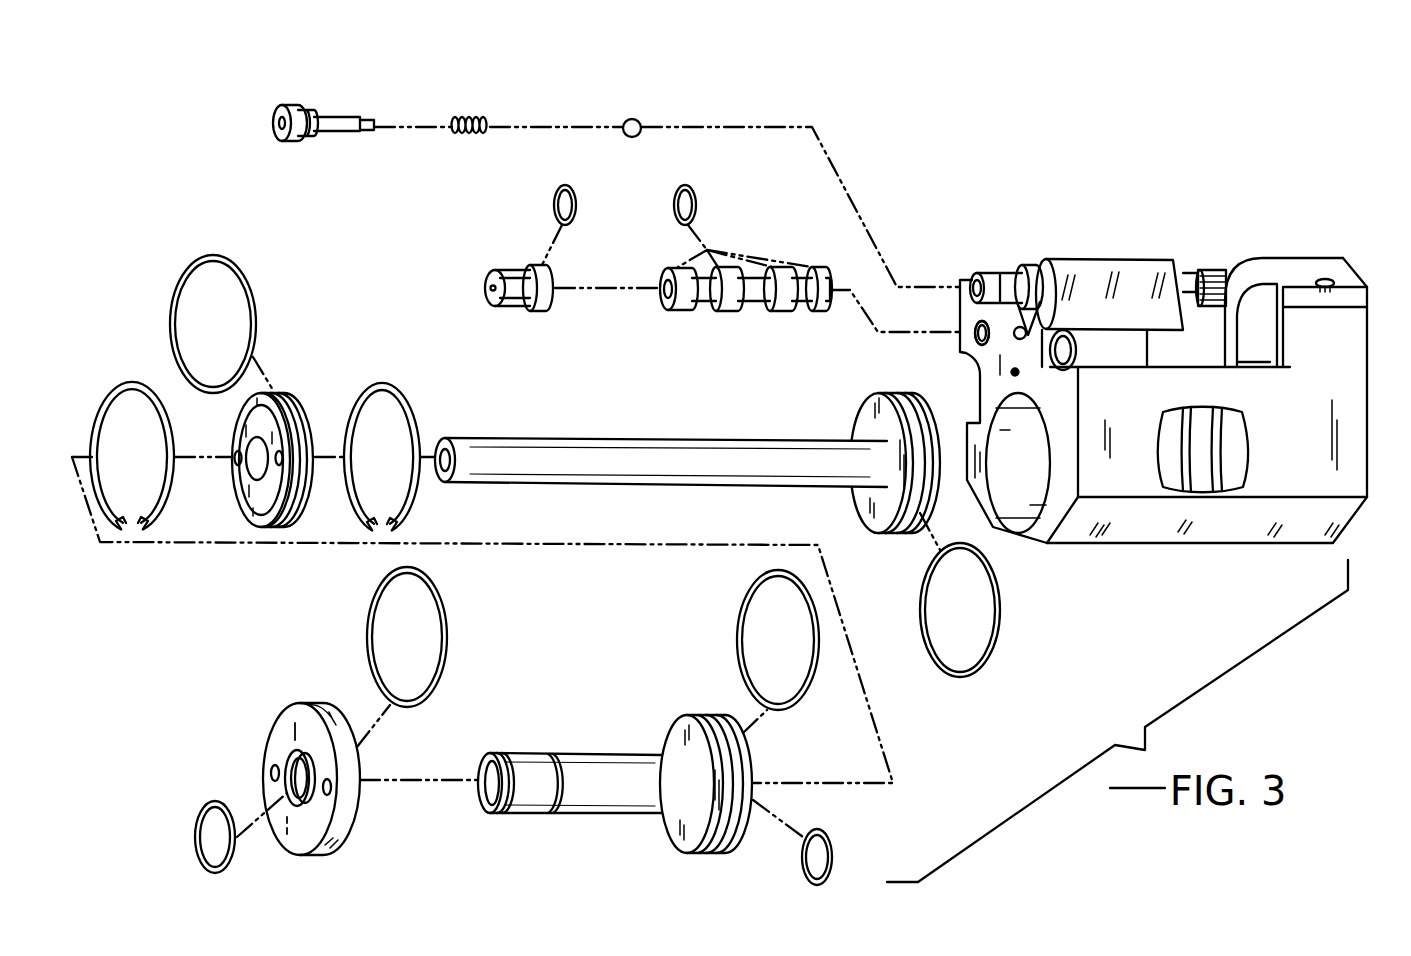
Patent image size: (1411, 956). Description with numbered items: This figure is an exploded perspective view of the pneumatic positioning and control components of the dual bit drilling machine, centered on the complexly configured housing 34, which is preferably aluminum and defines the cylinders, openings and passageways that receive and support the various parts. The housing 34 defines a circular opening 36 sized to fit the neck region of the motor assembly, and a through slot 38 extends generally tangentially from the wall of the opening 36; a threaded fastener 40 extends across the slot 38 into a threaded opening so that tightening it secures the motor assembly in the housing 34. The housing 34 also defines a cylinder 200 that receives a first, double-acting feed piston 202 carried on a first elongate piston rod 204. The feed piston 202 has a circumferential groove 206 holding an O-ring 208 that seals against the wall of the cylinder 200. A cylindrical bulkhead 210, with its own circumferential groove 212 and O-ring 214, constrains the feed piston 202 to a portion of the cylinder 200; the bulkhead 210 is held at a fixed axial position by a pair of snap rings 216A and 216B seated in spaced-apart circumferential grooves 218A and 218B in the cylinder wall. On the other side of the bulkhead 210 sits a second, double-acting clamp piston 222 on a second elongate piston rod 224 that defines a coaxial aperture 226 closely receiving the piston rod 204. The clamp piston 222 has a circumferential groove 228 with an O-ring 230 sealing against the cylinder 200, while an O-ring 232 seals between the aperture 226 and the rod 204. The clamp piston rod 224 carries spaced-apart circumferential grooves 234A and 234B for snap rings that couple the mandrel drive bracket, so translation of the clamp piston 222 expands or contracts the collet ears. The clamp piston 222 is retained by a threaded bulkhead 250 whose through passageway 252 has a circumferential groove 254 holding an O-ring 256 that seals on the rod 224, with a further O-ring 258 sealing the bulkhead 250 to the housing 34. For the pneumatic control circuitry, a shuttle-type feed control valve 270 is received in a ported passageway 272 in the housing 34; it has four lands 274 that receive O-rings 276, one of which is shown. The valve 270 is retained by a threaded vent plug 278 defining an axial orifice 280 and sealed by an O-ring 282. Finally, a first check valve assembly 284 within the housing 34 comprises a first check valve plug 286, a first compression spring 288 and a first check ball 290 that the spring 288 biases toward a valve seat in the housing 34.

The housing 34 is at (1245, 533).
The circular opening 36 is at (1284, 312).
The through slot 38 is at (1353, 310).
The threaded fastener 40 is at (1325, 280).
The cylinder 200 is at (1062, 444).
The feed piston 202 is at (860, 420).
The elongate piston rod 204 is at (617, 447).
The circumferential groove 206 is at (930, 425).
The O-ring 208 is at (1000, 607).
The cylindrical bulkhead 210 is at (288, 430).
The circumferential groove 212 is at (300, 517).
The O-ring 214 is at (252, 293).
The snap ring 216A is at (148, 530).
The snap ring 216B is at (413, 420).
The circumferential groove 218A is at (1168, 425).
The circumferential groove 218B is at (1245, 425).
The clamp piston 222 is at (753, 767).
The clamp piston rod 224 is at (593, 753).
The coaxial aperture 226 is at (502, 753).
The circumferential groove 228 is at (720, 852).
The O-ring 230 is at (740, 612).
The O-ring 232 is at (835, 850).
The circumferential groove 234A is at (497, 817).
The circumferential groove 234B is at (560, 816).
The threaded bulkhead 250 is at (283, 727).
The through passageway 252 is at (290, 762).
The circumferential groove 254 is at (307, 800).
The O-ring 256 is at (197, 837).
The O-ring 258 is at (447, 630).
The feed control valve 270 is at (757, 311).
The ported passageway 272 is at (960, 317).
The lands 274 is at (682, 312).
The O-rings 276 is at (697, 198).
The threaded vent plug 278 is at (505, 312).
The axial orifice 280 is at (485, 288).
The O-ring 282 is at (578, 196).
The first check valve assembly 284 is at (633, 75).
The first check valve plug 286 is at (338, 110).
The first compression spring 288 is at (475, 118).
The first check ball 290 is at (640, 121).